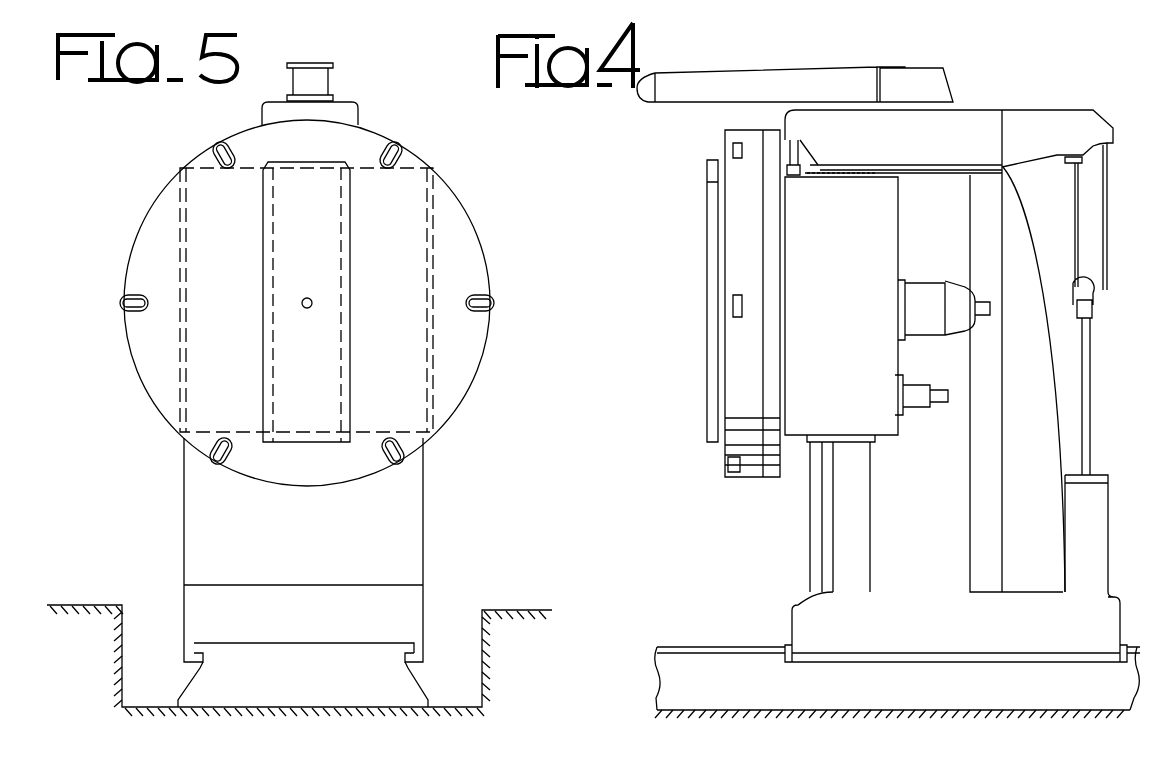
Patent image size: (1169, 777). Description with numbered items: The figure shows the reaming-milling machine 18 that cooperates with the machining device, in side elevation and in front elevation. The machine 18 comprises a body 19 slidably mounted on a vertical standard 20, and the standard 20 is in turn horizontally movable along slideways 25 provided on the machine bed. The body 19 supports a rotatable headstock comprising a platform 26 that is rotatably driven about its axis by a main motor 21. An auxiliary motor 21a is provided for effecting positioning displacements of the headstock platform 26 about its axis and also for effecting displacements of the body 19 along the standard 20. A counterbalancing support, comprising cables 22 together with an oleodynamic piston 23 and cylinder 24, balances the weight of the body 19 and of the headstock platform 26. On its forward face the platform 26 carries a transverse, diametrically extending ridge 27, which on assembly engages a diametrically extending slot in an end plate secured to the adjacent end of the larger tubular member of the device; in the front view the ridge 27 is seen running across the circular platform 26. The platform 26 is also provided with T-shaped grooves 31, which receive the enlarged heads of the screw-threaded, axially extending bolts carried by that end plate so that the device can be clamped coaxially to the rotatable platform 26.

In FIG. 4, the reaming-milling machine 18 is at (1066, 101).
In FIG. 4, the body 19 is at (817, 395).
In FIG. 5, the vertical standard 20 is at (208, 532).
In FIG. 4, the vertical standard 20 is at (918, 555).
In FIG. 4, the main motor 21 is at (912, 295).
In FIG. 4, the auxiliary motor 21a is at (910, 395).
In FIG. 4, the cables 22 is at (1107, 205).
In FIG. 4, the oleodynamic piston 23 is at (1088, 418).
In FIG. 4, the oleodynamic cylinder 24 is at (1097, 548).
In FIG. 5, the slideways 25 is at (228, 682).
In FIG. 4, the slideways 25 is at (690, 683).
In FIG. 5, the platform 26 is at (468, 344).
In FIG. 4, the platform 26 is at (748, 478).
In FIG. 5, the ridge 27 is at (327, 222).
In FIG. 4, the ridge 27 is at (707, 373).
In FIG. 5, the T-shaped grooves 31 is at (487, 303).
In FIG. 4, the T-shaped grooves 31 is at (733, 306).